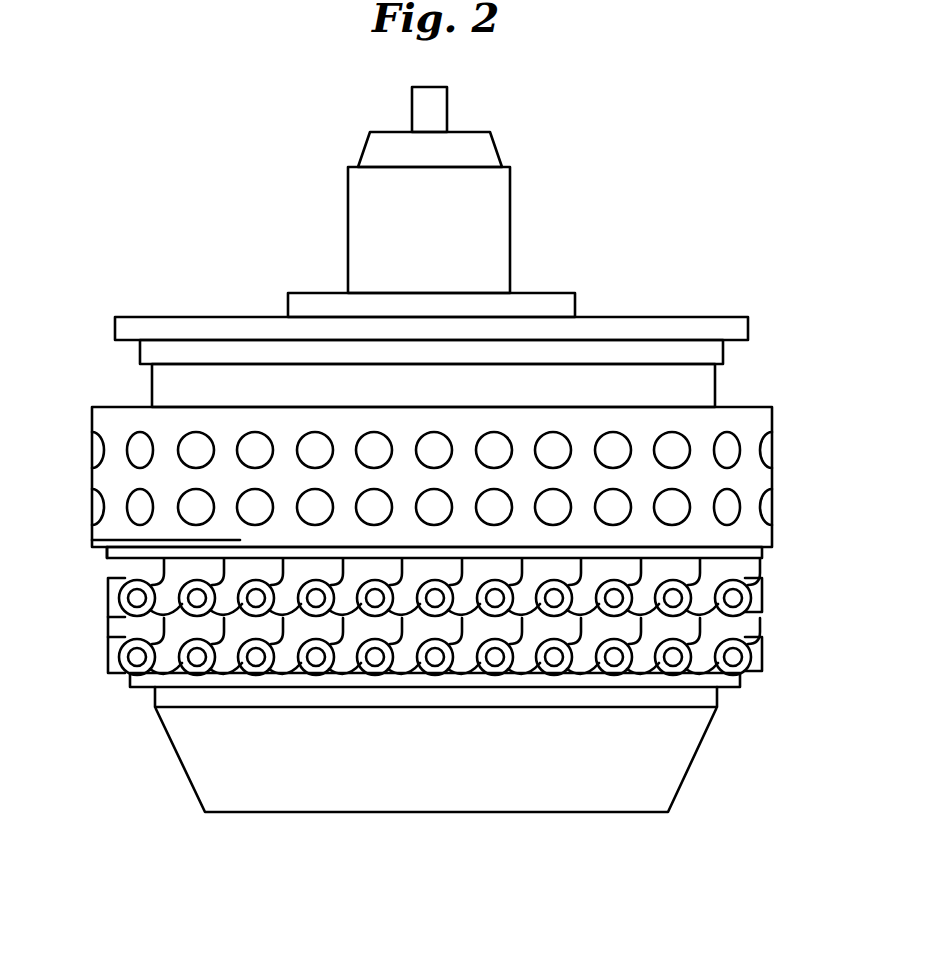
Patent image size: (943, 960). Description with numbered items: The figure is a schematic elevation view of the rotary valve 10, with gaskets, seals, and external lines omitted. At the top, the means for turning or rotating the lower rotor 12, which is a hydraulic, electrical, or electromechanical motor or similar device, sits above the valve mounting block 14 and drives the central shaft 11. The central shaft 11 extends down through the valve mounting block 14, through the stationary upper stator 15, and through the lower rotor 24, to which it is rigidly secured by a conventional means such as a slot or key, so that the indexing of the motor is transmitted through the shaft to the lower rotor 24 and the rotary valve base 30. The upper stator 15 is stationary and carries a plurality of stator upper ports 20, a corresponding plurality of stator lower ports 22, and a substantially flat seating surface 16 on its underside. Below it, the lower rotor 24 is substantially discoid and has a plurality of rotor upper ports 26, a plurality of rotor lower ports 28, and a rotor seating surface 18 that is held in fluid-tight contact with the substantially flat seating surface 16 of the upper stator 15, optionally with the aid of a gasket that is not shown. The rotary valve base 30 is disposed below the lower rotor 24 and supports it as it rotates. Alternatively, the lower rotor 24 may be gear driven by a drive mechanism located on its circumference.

The rotary valve 10 is at (636, 315).
The central shaft 11 is at (453, 116).
The means for turning or rotating the lower rotor 12 is at (513, 253).
The valve mounting block 14 is at (142, 375).
The upper stator 15 is at (732, 405).
The substantially flat seating surface 16 is at (236, 532).
The rotor seating surface 18 is at (118, 546).
The stator upper ports 20 is at (768, 438).
The stator lower ports 22 is at (768, 505).
The lower rotor 24 is at (122, 622).
The rotor upper ports 26 is at (764, 595).
The rotor lower ports 28 is at (764, 657).
The rotary valve base 30 is at (683, 770).